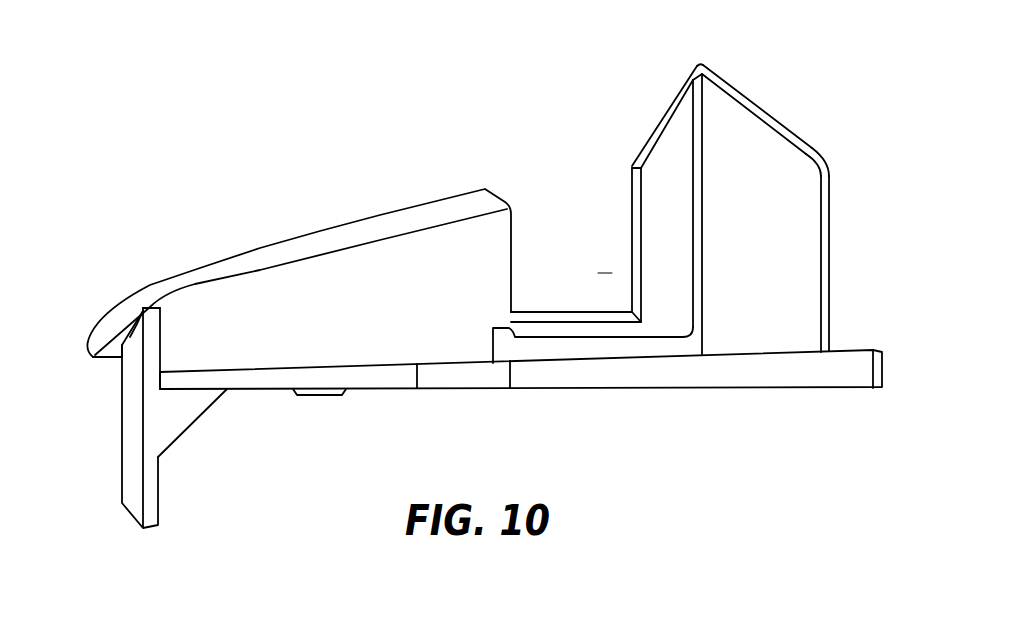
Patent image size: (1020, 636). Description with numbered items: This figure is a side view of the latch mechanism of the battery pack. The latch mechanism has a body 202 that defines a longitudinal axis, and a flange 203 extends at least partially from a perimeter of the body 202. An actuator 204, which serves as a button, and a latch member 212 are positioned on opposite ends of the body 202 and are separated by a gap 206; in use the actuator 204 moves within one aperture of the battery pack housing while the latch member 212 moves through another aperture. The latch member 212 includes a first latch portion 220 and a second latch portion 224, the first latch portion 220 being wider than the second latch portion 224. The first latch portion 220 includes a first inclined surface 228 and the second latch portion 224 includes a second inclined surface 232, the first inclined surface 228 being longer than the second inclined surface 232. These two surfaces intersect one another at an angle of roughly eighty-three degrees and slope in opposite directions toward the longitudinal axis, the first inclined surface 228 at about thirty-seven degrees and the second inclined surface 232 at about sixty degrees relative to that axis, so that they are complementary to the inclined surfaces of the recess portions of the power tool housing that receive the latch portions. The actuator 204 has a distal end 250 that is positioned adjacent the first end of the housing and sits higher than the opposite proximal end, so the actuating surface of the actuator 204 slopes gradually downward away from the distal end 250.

The body 202 is at (608, 330).
The flange 203 is at (793, 370).
The actuator 204 is at (287, 248).
The gap 206 is at (612, 273).
The latch member 212 is at (780, 205).
The first latch portion 220 is at (818, 148).
The second latch portion 224 is at (627, 228).
The first inclined surface 228 is at (760, 103).
The second inclined surface 232 is at (655, 127).
The distal end 250 is at (88, 345).